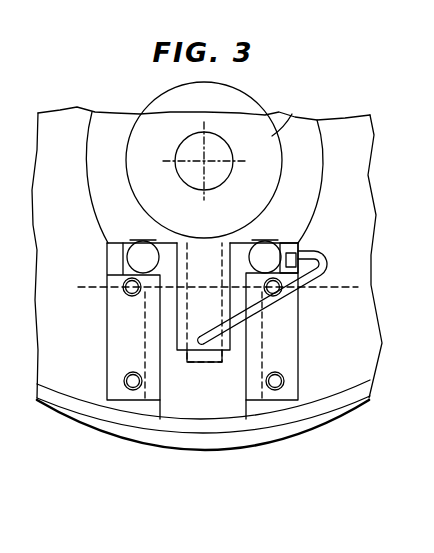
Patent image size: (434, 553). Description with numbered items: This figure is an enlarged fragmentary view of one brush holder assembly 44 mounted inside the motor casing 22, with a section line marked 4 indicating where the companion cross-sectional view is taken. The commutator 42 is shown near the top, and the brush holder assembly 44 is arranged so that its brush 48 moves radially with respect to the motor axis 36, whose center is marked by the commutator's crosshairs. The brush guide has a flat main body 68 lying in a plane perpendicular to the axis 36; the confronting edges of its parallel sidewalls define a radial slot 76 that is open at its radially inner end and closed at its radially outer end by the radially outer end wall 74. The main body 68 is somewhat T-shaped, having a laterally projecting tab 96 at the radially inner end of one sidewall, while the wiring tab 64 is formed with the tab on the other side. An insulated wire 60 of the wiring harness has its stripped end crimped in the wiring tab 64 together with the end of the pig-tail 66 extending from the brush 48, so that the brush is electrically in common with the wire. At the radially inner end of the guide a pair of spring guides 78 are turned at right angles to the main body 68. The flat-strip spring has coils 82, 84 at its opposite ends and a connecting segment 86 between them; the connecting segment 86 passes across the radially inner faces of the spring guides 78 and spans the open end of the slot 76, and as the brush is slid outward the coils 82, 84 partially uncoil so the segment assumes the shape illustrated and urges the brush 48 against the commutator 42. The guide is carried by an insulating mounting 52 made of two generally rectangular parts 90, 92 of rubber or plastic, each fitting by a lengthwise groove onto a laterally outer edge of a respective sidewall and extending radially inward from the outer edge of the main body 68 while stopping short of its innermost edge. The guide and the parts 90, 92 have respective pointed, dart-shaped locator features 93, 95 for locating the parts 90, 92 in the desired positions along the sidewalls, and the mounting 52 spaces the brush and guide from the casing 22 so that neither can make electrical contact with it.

The casing 22 is at (340, 416).
The axis 36 is at (205, 160).
The commutator 42 is at (289, 113).
The brush holder assembly 44 is at (103, 386).
The brush 48 is at (200, 303).
The mounting 52 is at (118, 400).
The insulated wire 60 is at (333, 255).
The wiring tab 64 is at (302, 248).
The pig-tail 66 is at (300, 297).
The main body 68 is at (183, 420).
The radially outer end wall 74 is at (223, 408).
The radial slot 76 is at (216, 238).
The spring guides 78 is at (130, 243).
The coil 82 is at (100, 243).
The coil 84 is at (315, 238).
The connecting segment 86 is at (181, 255).
The part 90 is at (132, 401).
The part 92 is at (283, 400).
The locator feature 93 is at (140, 336).
The locator feature 95 is at (263, 340).
The laterally projecting tab 96 is at (107, 276).
The section line 4- 4 is at (78, 287).